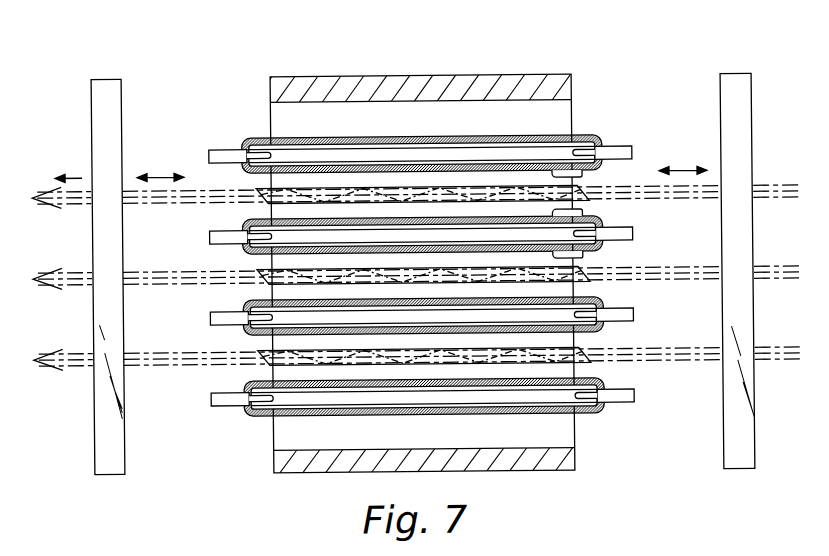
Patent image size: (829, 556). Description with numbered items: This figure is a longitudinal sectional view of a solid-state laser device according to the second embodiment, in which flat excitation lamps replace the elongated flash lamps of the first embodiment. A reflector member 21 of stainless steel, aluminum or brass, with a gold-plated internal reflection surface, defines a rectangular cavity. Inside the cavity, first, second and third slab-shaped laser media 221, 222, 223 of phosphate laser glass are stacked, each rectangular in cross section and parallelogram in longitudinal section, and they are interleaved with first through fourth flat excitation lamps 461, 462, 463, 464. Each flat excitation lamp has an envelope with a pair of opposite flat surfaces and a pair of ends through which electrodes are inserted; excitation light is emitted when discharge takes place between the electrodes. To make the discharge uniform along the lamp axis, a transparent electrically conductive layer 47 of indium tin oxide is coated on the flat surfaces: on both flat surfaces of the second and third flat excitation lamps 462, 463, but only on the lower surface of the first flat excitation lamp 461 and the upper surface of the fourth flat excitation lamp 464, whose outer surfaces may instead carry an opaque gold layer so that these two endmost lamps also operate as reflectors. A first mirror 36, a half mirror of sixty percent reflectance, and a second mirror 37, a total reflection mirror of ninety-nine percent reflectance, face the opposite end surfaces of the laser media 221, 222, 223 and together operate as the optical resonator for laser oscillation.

The reflector member 21 is at (443, 75).
The first mirror 36 is at (108, 76).
The second mirror 37 is at (735, 72).
The first flat excitation lamp 461 is at (297, 146).
The second flat excitation lamp 462 is at (307, 230).
The third flat excitation lamp 463 is at (294, 308).
The fourth flat excitation lamp 464 is at (298, 394).
The first slab-shaped laser medium 221 is at (267, 187).
The second slab-shaped laser medium 222 is at (267, 270).
The third slab-shaped laser medium 223 is at (267, 352).
The electrically conductive layer 47 is at (583, 175).